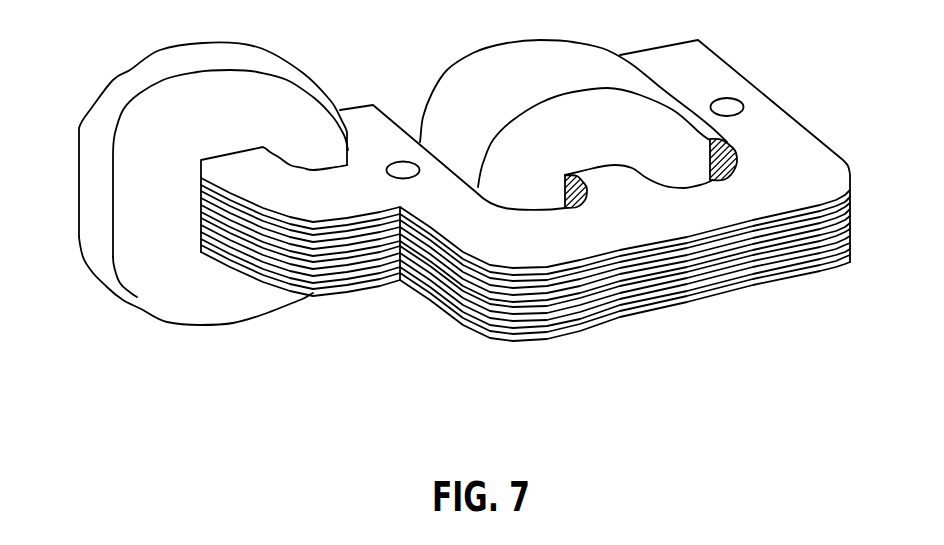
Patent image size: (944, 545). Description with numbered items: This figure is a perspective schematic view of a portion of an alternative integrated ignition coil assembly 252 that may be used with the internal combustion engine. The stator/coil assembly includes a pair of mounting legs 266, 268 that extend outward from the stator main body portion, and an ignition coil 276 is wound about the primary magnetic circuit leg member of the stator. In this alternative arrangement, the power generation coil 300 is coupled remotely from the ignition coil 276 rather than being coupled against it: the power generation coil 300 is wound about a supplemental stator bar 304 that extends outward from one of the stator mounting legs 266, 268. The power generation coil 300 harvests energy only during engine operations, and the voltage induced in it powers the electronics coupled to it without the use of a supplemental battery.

The integrated ignition coil assembly 252 is at (471, 201).
The mounting leg 266 is at (505, 252).
The mounting leg 268 is at (724, 85).
The ignition coil 276 is at (720, 137).
The power generation coil 300 is at (233, 55).
The supplemental stator bar 304 is at (313, 201).